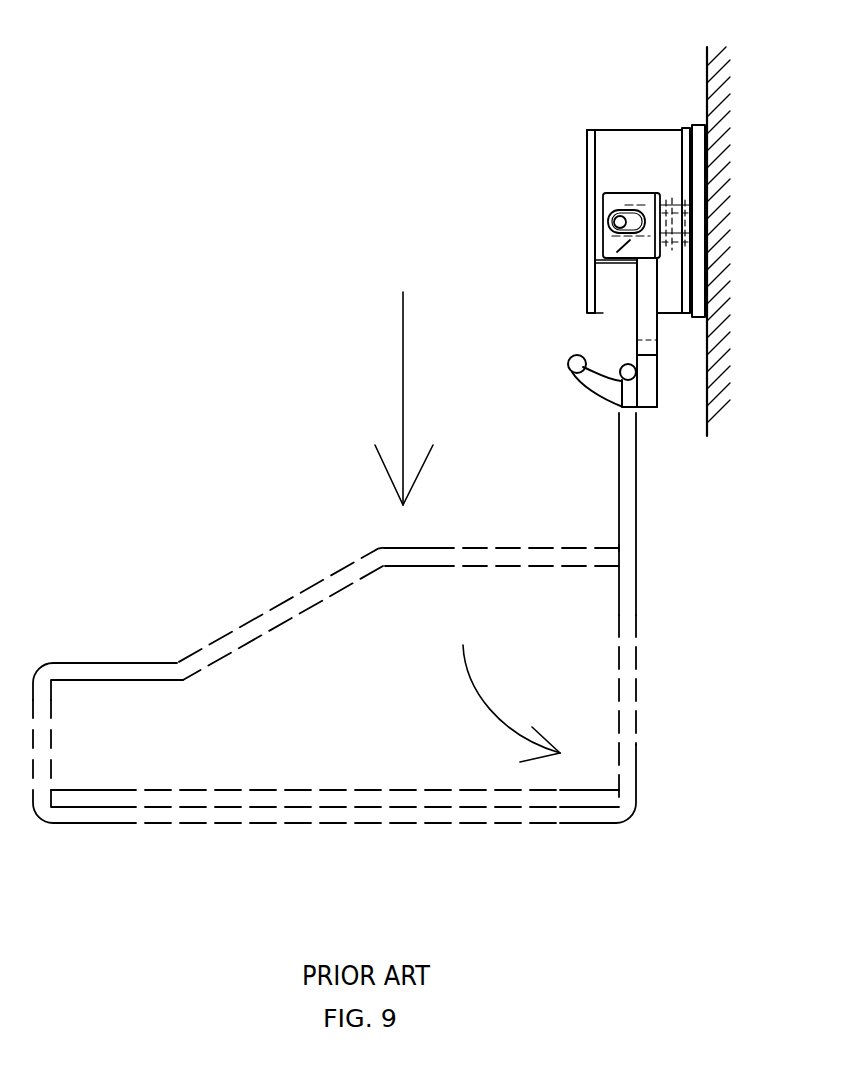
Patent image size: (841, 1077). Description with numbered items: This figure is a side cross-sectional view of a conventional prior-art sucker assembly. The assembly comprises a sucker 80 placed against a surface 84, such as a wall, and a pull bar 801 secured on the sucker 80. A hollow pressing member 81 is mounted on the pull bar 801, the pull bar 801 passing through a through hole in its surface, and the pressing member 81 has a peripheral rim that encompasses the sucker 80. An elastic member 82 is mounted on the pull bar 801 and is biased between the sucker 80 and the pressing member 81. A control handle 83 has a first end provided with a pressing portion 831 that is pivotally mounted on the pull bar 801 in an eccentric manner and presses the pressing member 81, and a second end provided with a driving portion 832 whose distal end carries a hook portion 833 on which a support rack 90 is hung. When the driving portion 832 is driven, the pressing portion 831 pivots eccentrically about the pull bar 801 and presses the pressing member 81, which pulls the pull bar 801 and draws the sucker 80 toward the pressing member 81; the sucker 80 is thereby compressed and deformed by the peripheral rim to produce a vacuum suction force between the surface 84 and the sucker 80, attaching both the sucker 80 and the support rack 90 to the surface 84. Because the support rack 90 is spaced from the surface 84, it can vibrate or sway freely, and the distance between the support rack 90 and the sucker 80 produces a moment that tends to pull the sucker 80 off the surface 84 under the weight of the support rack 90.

The sucker 80 is at (697, 143).
The hollow pressing member 81 is at (603, 163).
The pull bar 801 is at (607, 183).
The elastic member 82 is at (585, 258).
The pressing portion 831 is at (652, 190).
The driving portion 832 is at (637, 328).
The hook portion 833 is at (603, 397).
The control handle 83 is at (585, 382).
The surface 84 is at (712, 253).
The support rack 90 is at (500, 813).